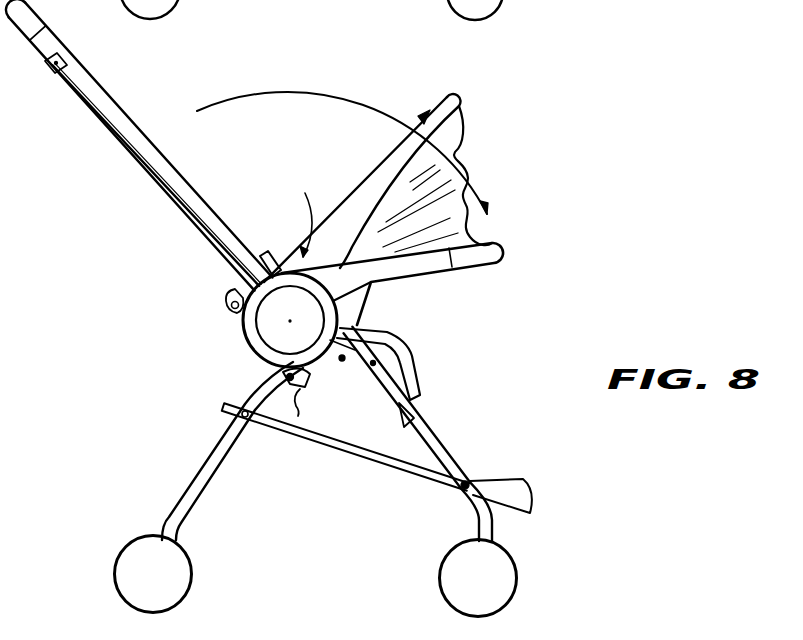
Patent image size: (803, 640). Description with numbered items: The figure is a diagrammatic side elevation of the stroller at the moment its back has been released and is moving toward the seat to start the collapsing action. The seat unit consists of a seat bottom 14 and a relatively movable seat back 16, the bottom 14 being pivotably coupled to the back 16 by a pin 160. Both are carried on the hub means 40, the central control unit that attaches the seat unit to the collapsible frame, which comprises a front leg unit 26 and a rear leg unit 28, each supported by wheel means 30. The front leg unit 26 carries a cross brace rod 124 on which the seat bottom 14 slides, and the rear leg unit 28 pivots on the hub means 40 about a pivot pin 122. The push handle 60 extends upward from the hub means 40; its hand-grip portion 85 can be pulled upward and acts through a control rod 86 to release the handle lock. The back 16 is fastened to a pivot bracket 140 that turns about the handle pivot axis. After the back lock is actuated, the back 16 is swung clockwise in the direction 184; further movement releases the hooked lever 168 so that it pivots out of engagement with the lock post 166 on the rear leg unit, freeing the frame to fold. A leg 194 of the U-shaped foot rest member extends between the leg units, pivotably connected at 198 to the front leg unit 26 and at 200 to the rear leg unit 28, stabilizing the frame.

The seat bottom 14 is at (411, 388).
The seat back 16 is at (385, 157).
The front leg unit 26 is at (435, 445).
The rear leg unit 28 is at (180, 500).
The wheel means 30 is at (200, 564).
The hub means 40 is at (291, 210).
The push handle 60 is at (53, 34).
The hand-grip portion 85 is at (36, 54).
The control rod 86 is at (222, 265).
The pivot pin 122 is at (343, 363).
The cross brace rod 124 is at (262, 373).
The pivot bracket 140 is at (254, 255).
The pin 160 is at (229, 311).
The lock post 166 is at (283, 377).
The hooked lever 168 is at (319, 387).
The direction 184 is at (345, 95).
The leg 194 is at (391, 467).
The pivot connection 198 is at (469, 479).
The pivot connection 200 is at (247, 418).